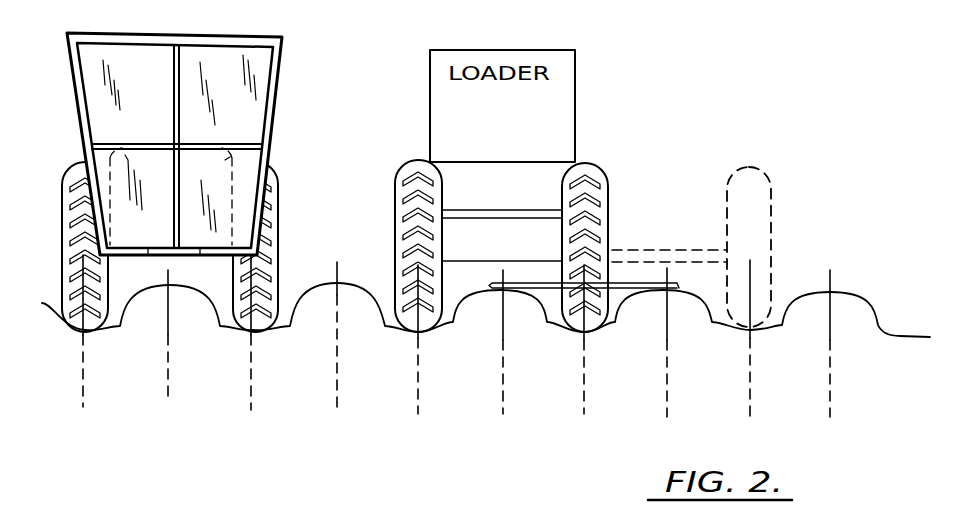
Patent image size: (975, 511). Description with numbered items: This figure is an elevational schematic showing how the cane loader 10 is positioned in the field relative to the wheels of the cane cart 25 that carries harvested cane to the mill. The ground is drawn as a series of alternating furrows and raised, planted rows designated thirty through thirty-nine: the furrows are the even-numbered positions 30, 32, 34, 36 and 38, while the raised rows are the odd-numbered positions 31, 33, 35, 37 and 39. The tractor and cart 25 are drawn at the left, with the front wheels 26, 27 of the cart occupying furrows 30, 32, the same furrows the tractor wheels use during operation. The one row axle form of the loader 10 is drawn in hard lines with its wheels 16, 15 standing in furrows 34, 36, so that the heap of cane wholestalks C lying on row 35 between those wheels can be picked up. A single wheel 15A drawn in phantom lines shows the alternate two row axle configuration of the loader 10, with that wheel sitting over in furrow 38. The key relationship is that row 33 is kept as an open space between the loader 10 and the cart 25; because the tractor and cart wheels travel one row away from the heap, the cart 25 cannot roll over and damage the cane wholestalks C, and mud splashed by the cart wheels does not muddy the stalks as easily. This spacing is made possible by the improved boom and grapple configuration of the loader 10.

The cane loader 10 is at (654, 75).
The loader wheel 15 is at (601, 167).
The two row axle loader wheel 15A is at (752, 167).
The loader wheel 16 is at (398, 192).
The cane cart 25 is at (280, 92).
The front wheel of cane cart 26 is at (273, 232).
The front wheel of cane cart 27 is at (90, 271).
The furrow 30 is at (83, 397).
The raised/planted row 31 is at (168, 392).
The furrow 32 is at (251, 401).
The raised/planted row 33 is at (337, 405).
The furrow 34 is at (418, 405).
The raised/planted row 35 is at (503, 405).
The furrow 36 is at (584, 405).
The raised/planted row 37 is at (667, 407).
The furrow 38 is at (750, 407).
The raised/planted row 39 is at (830, 407).
The cane wholestalks C is at (640, 283).